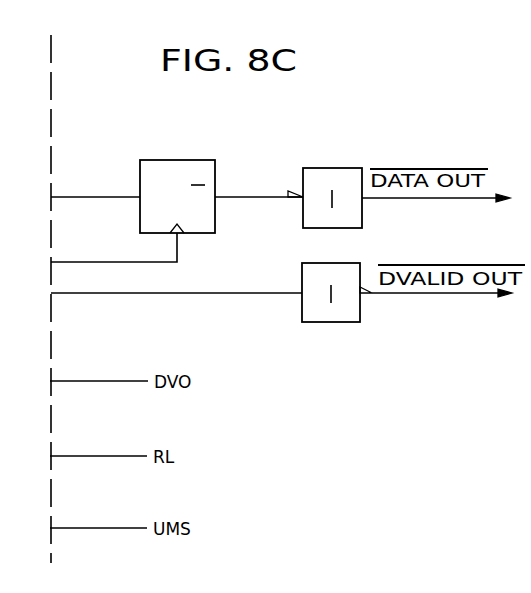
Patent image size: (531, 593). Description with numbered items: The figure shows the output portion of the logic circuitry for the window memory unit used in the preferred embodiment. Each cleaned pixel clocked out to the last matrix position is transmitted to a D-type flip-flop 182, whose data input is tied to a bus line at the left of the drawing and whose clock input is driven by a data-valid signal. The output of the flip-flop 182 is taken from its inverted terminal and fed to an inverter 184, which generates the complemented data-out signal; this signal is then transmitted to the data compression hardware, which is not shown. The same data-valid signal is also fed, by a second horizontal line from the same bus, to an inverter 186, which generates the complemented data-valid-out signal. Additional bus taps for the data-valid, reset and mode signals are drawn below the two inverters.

The flip-flop 182 is at (178, 165).
The inverter 184 is at (331, 172).
The inverter 186 is at (310, 278).